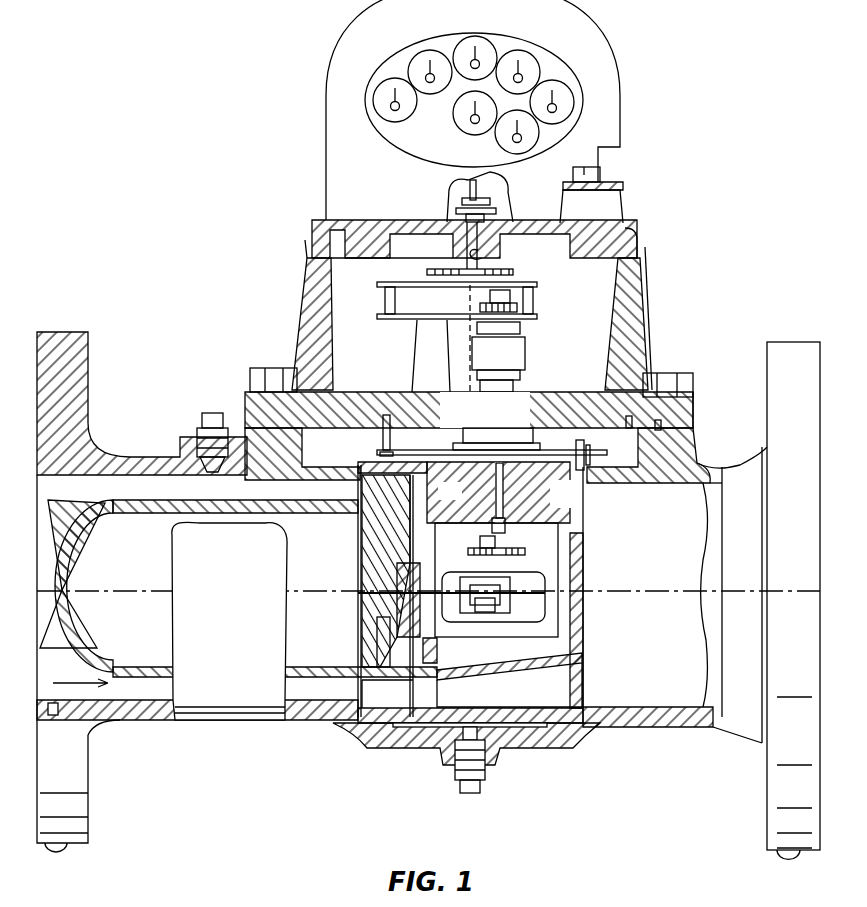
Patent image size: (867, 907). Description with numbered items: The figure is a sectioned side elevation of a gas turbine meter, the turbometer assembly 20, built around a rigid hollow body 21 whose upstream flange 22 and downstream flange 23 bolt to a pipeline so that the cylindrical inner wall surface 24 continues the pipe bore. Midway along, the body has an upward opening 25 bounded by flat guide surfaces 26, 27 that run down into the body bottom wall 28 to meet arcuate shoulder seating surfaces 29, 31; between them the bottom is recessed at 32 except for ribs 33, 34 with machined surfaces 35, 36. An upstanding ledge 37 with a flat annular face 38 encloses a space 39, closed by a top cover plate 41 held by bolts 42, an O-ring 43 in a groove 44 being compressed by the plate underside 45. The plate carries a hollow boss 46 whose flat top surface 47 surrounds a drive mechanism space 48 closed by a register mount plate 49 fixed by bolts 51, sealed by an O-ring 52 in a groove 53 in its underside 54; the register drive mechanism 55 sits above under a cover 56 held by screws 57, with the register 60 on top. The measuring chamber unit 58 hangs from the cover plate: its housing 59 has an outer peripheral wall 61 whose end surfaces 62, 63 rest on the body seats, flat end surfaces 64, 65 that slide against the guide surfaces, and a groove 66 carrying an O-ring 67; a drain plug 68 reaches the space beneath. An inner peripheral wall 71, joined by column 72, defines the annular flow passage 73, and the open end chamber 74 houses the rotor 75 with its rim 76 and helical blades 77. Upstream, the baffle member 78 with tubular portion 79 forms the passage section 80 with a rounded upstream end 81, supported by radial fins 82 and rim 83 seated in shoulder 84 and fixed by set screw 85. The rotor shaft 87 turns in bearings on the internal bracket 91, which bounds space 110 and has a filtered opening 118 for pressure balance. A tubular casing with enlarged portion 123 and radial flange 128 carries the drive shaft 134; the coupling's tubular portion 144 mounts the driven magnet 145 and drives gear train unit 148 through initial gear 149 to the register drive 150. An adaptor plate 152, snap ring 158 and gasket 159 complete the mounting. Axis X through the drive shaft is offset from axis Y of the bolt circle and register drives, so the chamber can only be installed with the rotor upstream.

The turbometer assembly 20 is at (265, 329).
The hollow body 21 is at (156, 460).
The upstream flange 22 is at (80, 352).
The downstream flange 23 is at (780, 358).
The cylindrical inner wall surface 24 is at (245, 478).
The opening 25 is at (570, 510).
The guide surface 26 is at (358, 477).
The guide surface 27 is at (577, 478).
The body bottom wall 28 is at (420, 745).
The shoulder seating surface 29 is at (370, 735).
The shoulder seating surface 31 is at (590, 740).
The recess 32 is at (538, 740).
The rib 33 is at (393, 740).
The rib 34 is at (560, 740).
The rib surface 35 is at (387, 717).
The rib surface 36 is at (560, 712).
The body ledge 37 is at (300, 445).
The annular face 38 is at (682, 427).
The space 39 is at (627, 460).
The top cover plate 41 is at (688, 407).
The bolt 42 is at (667, 380).
The O-ring 43 is at (658, 427).
The groove 44 is at (658, 435).
The underside of plate 45 is at (628, 427).
The hollow boss 46 is at (627, 307).
The top surface 47 is at (622, 228).
The drive mechanism space 48 is at (594, 295).
The register mount plate 49 is at (373, 223).
The bolt 51 is at (640, 240).
The O-ring 52 is at (322, 265).
The groove 53 is at (320, 257).
The underside of plate 54 is at (372, 262).
The register drive mechanism 55 is at (500, 190).
The cover 56 is at (623, 195).
The screw 57 is at (606, 172).
The internal measuring chamber unit 58 is at (602, 554).
The housing 59 is at (429, 458).
The register 60 is at (587, 42).
The outer peripheral wall 61 is at (505, 740).
The cylindrical peripheral surface 62 is at (375, 740).
The cylindrical peripheral surface 63 is at (580, 745).
The end surface 64 is at (350, 728).
The end surface 65 is at (615, 682).
The groove 66 is at (578, 470).
The O-ring 67 is at (588, 468).
The drain plug 68 is at (460, 773).
The inner peripheral wall 71 is at (490, 672).
The column 72 is at (475, 492).
The annular flow passage 73 is at (583, 670).
The open end chamber 74 is at (367, 543).
The rotor 75 is at (365, 560).
The annular rim 76 is at (372, 667).
The peripheral blades 77 is at (367, 680).
The baffle member 78 is at (160, 505).
The tubular portion 79 is at (200, 505).
The annular flow passage section 80 is at (159, 697).
The upstream end 81 is at (65, 580).
The radial fin 82 is at (110, 505).
The annular rim 83 is at (50, 467).
The shoulder 84 is at (100, 467).
The set screw 85 is at (52, 722).
The rotor shaft 87 is at (377, 593).
The internal bracket 91 is at (545, 628).
The space 110 is at (556, 554).
The opening 118 is at (437, 652).
The enlarged portion 123 is at (520, 390).
The radial flange 128 is at (530, 440).
The drive shaft 134 is at (507, 492).
The tubular portion 144 is at (525, 352).
The driven magnet 145 is at (520, 374).
The gear train unit 148 is at (533, 283).
The initial gear 149 is at (480, 307).
The register drive mechanism 150 is at (489, 263).
The adaptor plate 152 is at (383, 443).
The snap ring 158 is at (448, 393).
The gasket 159 is at (587, 440).
The vertical axis X is at (500, 347).
The vertical axis Y is at (467, 330).